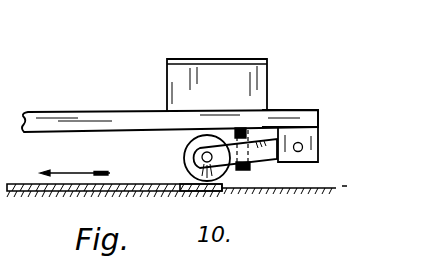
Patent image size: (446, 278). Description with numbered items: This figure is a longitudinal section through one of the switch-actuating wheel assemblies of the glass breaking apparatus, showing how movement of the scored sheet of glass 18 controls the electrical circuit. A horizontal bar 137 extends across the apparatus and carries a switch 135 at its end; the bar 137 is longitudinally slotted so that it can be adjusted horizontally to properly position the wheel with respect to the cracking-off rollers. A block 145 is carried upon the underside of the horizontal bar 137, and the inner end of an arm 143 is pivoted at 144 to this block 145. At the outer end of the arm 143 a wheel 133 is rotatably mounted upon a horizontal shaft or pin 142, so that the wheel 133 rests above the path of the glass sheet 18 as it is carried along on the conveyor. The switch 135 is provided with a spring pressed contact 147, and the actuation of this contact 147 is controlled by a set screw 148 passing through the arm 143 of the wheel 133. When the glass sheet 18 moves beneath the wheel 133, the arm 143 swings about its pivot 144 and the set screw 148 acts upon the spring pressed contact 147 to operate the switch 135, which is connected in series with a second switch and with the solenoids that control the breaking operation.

The scored sheet of glass 18 is at (24, 184).
The wheel 133 is at (186, 152).
The switch 135 is at (210, 72).
The horizontal bar 137 is at (123, 116).
The horizontal shaft or pin 142 is at (213, 190).
The arm 143 is at (265, 178).
The pivot 144 is at (298, 152).
The block 145 is at (309, 133).
The spring pressed contact 147 is at (233, 133).
The set screw 148 is at (263, 125).